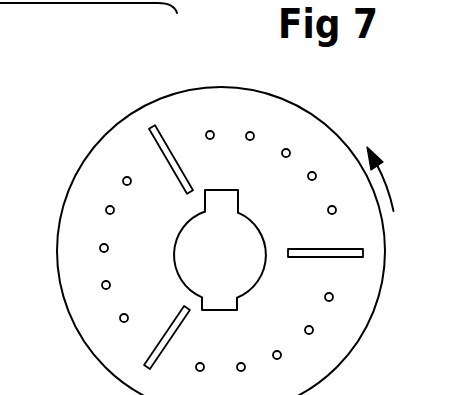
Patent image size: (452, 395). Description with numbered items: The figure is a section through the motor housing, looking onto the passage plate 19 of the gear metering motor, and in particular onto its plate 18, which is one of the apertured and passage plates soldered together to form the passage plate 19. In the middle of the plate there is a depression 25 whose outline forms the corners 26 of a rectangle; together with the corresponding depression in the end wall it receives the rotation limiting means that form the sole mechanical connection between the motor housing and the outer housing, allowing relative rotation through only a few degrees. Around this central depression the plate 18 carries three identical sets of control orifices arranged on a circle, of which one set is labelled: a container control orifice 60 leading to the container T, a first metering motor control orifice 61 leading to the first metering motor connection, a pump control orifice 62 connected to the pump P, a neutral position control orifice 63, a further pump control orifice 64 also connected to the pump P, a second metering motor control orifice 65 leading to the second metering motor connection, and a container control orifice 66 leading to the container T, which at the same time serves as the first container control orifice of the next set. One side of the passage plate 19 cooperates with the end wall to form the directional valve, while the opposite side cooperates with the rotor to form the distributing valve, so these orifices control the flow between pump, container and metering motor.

The plate 18 is at (278, 122).
The passage plate 19 is at (107, 119).
The depression 25 is at (247, 267).
The corners 26 is at (229, 197).
The container control orifice 60 is at (100, 250).
The first metering motor control orifice 61 is at (105, 210).
The pump control orifice 62 is at (122, 179).
The neutral position control orifice 63 is at (152, 127).
The further pump control orifice 64 is at (210, 130).
The second metering motor control orifice 65 is at (250, 131).
The container control orifice 66 is at (291, 151).